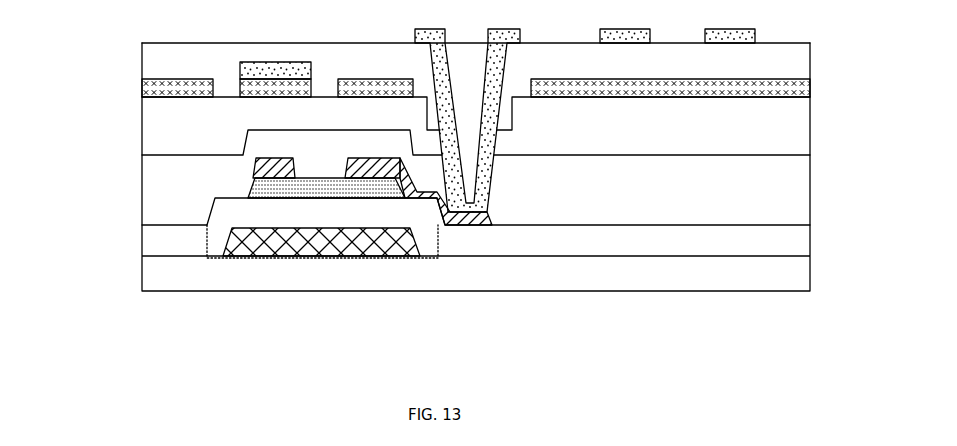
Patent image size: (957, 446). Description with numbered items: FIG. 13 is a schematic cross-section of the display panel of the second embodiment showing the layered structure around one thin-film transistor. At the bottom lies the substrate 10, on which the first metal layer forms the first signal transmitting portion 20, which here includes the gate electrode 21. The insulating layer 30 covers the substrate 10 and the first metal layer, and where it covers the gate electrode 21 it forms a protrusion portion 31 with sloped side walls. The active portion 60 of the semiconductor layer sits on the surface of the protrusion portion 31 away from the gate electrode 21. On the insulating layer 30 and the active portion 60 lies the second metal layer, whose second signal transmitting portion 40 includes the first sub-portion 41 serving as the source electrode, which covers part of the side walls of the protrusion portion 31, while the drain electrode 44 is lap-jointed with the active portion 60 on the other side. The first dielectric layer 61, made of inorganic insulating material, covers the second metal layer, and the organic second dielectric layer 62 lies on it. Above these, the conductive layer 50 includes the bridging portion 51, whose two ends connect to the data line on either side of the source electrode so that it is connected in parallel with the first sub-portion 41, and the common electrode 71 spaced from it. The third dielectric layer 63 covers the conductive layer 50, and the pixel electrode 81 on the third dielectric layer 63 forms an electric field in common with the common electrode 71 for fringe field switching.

The substrate 10 is at (800, 272).
The insulating layer 30 is at (797, 242).
The protrusion portion 31 is at (224, 222).
The gate electrode 21 is at (321, 275).
The first signal transmitting portion 20 is at (317, 243).
The active portion 60 is at (287, 192).
The first sub-portion 41 is at (226, 176).
The second signal transmitting portion 40 is at (273, 172).
The drain electrode 44 is at (417, 197).
The first dielectric layer 61 is at (790, 200).
The second dielectric layer 62 is at (792, 138).
The third dielectric layer 63 is at (792, 68).
The common electrode 71 is at (807, 87).
The bridging portion 51 is at (257, 47).
The conductive layer 50 is at (284, 70).
The pixel electrode 81 is at (507, 29).